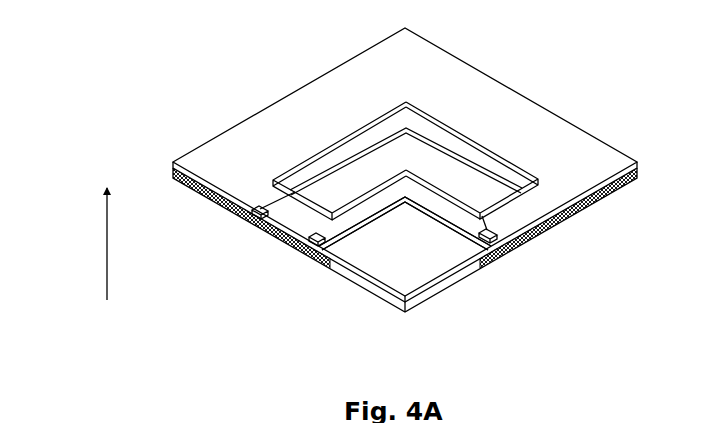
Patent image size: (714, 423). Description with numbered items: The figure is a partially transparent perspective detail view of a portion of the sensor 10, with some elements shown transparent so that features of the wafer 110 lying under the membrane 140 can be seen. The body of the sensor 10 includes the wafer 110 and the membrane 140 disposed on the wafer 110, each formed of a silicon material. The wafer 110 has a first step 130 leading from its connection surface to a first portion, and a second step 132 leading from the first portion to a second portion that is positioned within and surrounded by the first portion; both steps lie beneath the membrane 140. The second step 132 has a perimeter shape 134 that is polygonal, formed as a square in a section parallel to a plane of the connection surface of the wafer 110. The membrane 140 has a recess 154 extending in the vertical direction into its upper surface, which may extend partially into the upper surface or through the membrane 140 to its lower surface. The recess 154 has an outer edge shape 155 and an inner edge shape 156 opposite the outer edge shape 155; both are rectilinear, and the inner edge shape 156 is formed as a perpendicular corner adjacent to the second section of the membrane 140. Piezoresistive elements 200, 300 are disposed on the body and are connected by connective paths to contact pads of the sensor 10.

The sensor 10 is at (114, 38).
The wafer 110 is at (597, 200).
The first step 130 is at (393, 120).
The second step 132 is at (380, 212).
The perimeter shape 134 is at (380, 212).
The membrane 140 is at (570, 162).
The recess 154 is at (340, 134).
The outer edge shape 155 is at (288, 165).
The inner edge shape 156 is at (436, 188).
The piezoresistive element 200 is at (250, 220).
The piezoresistive element 300 is at (308, 250).